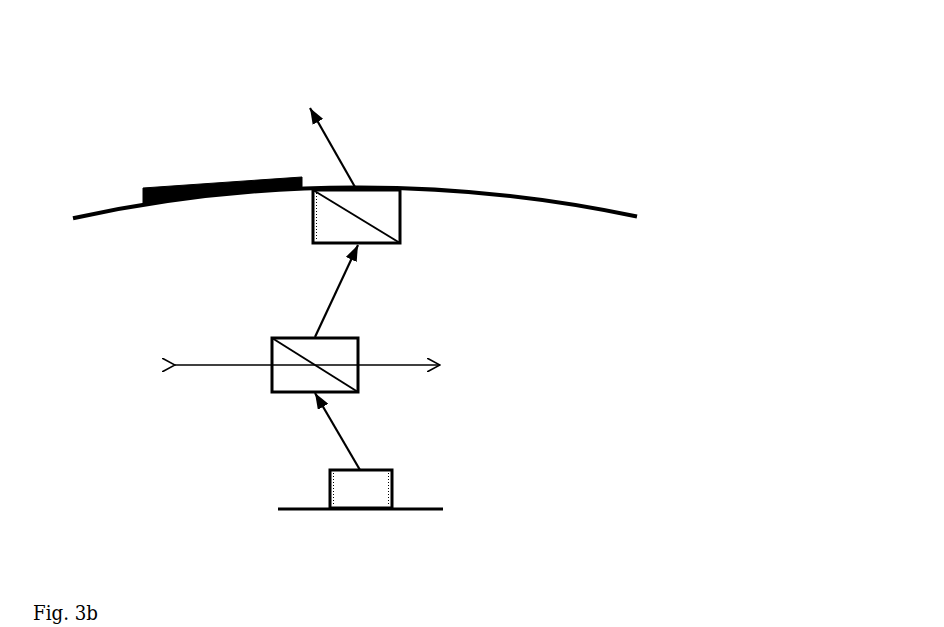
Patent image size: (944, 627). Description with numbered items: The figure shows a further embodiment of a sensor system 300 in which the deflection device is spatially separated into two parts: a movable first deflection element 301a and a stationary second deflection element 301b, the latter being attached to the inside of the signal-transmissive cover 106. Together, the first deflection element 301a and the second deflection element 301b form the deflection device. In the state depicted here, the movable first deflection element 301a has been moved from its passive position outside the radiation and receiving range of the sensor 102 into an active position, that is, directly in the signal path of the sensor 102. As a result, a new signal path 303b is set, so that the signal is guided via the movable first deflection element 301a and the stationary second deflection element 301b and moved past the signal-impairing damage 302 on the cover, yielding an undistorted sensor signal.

The sensor 102 is at (408, 495).
The signal-transmissive cover 106 is at (563, 198).
The sensor system 300 is at (382, 172).
The movable first deflection element 301a is at (287, 378).
The stationary second deflection element 301b is at (372, 217).
The signal-impairing damage 302 is at (258, 193).
The new signal path 303b is at (355, 190).